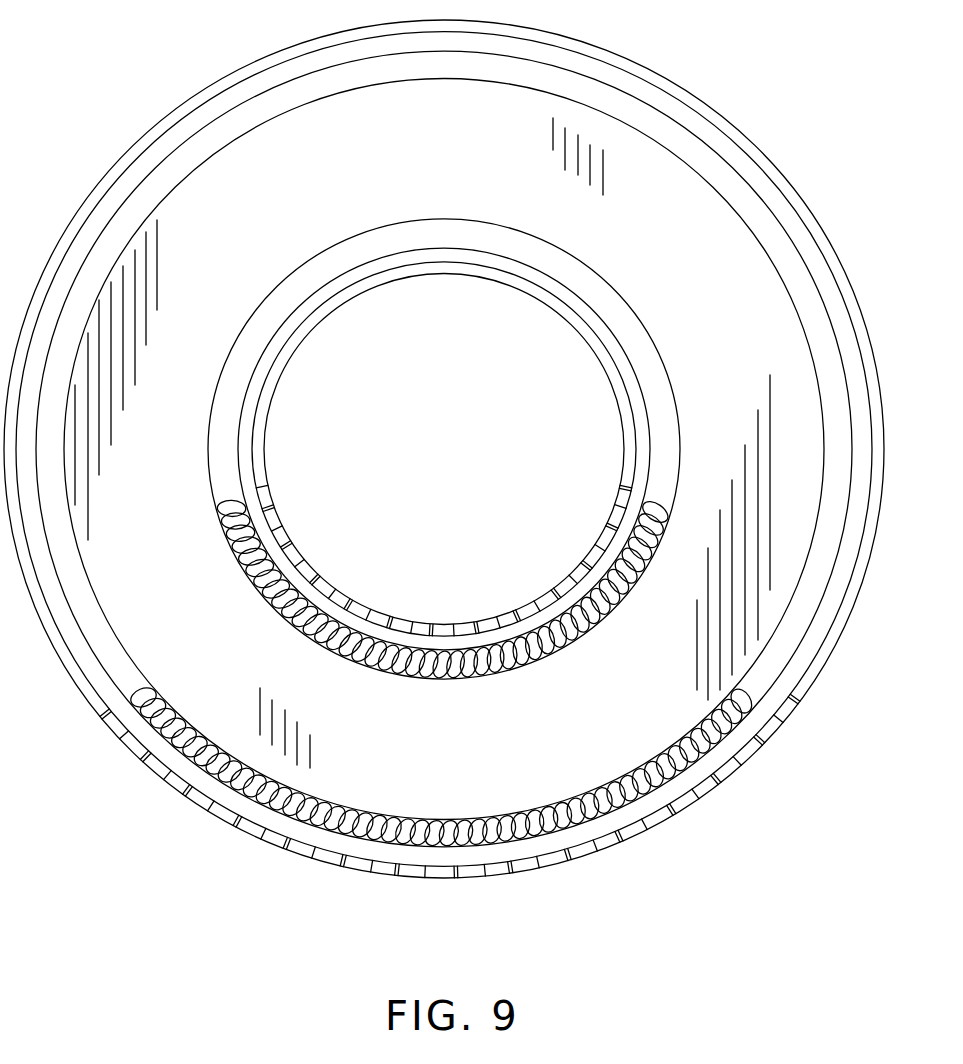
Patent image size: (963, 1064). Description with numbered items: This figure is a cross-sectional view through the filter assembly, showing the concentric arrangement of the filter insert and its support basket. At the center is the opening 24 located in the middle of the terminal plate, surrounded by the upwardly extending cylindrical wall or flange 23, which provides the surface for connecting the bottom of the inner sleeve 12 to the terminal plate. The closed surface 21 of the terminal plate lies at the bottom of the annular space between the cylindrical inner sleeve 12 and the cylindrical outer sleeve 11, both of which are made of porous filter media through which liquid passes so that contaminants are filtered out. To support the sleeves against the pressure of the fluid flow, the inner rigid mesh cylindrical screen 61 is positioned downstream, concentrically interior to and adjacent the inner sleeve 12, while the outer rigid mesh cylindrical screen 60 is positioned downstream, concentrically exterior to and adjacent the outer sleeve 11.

The closed surface 21 is at (444, 449).
The upwardly extending cylindrical wall or flange 23 is at (642, 432).
The opening 24 is at (471, 276).
The cylindrical outer sleeve 11 is at (345, 815).
The outer rigid mesh cylindrical screen 60 is at (212, 808).
The cylindrical inner sleeve 12 is at (267, 590).
The inner rigid mesh cylindrical screen 61 is at (338, 592).